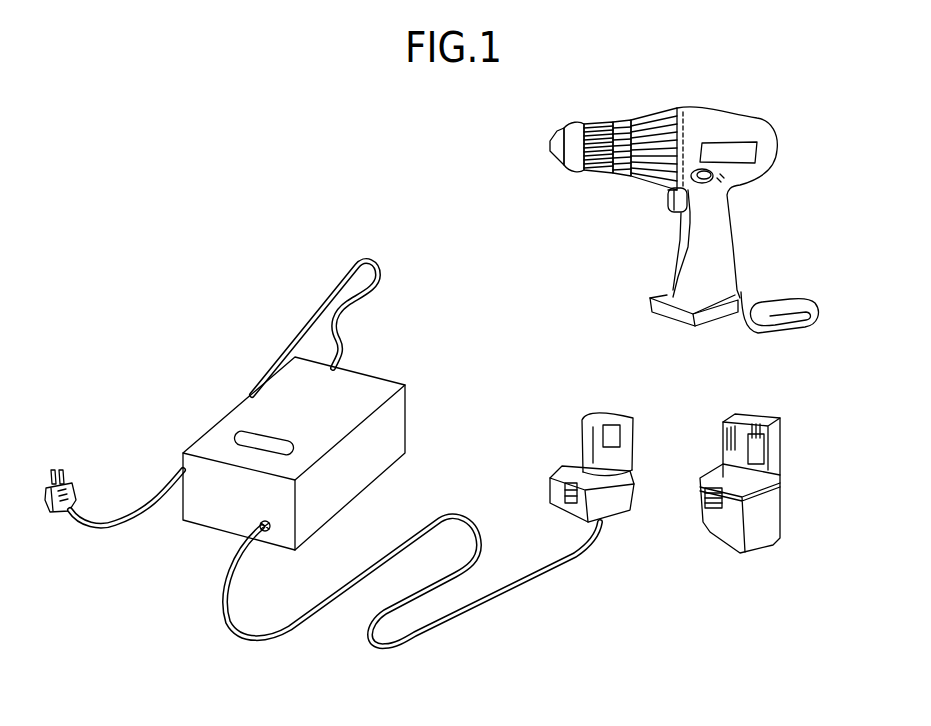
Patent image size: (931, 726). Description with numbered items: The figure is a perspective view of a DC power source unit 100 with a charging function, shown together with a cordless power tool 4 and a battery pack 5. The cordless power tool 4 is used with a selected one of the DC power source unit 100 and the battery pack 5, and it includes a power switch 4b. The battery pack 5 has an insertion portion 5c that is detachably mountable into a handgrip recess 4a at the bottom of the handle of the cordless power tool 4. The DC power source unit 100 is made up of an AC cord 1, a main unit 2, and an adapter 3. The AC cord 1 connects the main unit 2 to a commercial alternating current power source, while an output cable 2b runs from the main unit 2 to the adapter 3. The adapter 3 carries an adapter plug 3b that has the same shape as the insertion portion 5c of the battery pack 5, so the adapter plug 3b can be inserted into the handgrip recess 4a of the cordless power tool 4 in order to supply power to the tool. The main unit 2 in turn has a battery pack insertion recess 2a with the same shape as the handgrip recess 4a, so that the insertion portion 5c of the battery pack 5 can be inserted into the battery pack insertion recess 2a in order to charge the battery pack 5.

The DC power source unit 100 is at (208, 292).
The AC cord 1 is at (50, 507).
The main unit 2 is at (391, 453).
The battery pack insertion recess 2a is at (262, 436).
The output cable 2b is at (460, 514).
The adapter 3 is at (623, 481).
The adapter plug 3b is at (635, 433).
The cordless power tool 4 is at (684, 246).
The handgrip recess 4a is at (670, 334).
The power switch 4b is at (668, 200).
The battery pack 5 is at (772, 483).
The insertion portion 5c is at (780, 447).